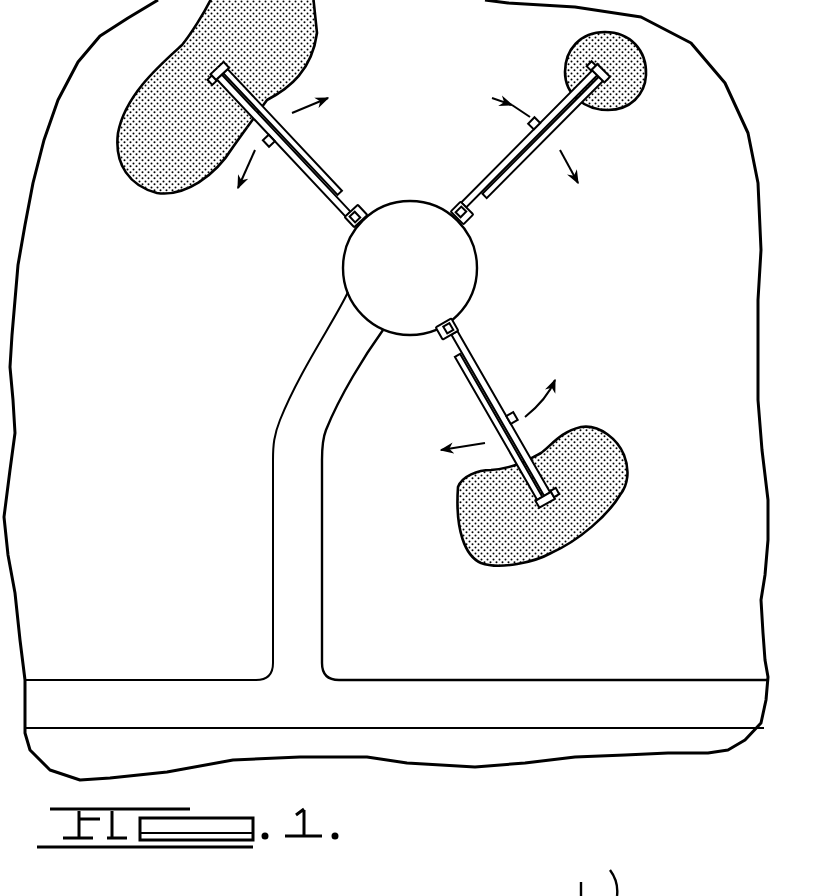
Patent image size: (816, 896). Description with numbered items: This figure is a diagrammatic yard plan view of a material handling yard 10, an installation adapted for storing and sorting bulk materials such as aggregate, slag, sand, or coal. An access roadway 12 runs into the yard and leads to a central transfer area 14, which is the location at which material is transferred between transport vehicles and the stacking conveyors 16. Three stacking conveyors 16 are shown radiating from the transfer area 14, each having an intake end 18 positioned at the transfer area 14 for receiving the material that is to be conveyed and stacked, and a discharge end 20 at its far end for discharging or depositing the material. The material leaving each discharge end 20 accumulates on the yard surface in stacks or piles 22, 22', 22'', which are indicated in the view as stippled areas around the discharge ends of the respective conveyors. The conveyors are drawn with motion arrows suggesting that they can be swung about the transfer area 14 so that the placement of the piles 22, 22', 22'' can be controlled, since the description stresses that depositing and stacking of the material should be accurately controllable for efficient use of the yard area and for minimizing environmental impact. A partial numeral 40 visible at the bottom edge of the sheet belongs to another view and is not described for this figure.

The material handling yard 10 is at (668, 312).
The access roadway 12 is at (288, 540).
The transfer area 14 is at (362, 268).
The stacking conveyor 16 is at (330, 158).
The intake end 18 is at (364, 208).
The discharge end 20 is at (212, 62).
The stack or pile 22 is at (635, 76).
The stack or pile 22' is at (579, 496).
The stack or pile 22'' is at (189, 117).
The component of adjacent figure 40 is at (593, 877).